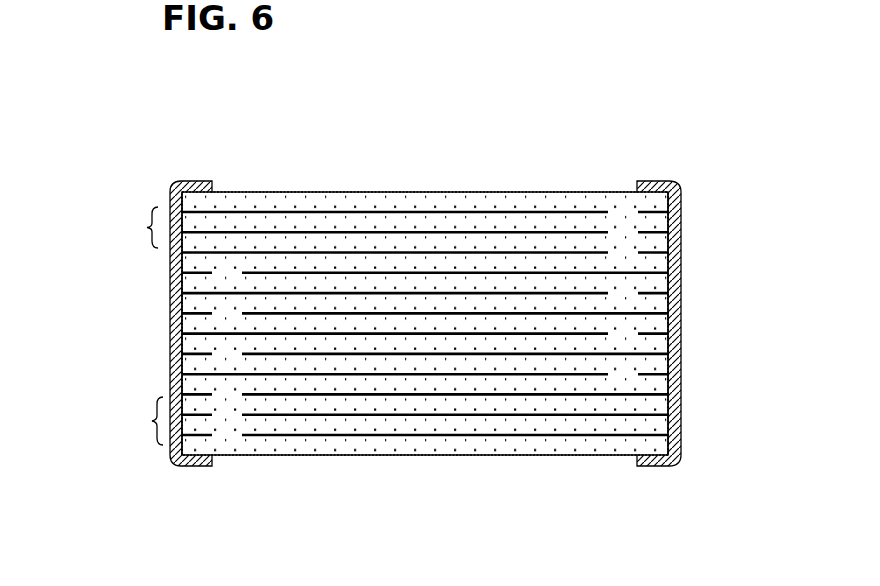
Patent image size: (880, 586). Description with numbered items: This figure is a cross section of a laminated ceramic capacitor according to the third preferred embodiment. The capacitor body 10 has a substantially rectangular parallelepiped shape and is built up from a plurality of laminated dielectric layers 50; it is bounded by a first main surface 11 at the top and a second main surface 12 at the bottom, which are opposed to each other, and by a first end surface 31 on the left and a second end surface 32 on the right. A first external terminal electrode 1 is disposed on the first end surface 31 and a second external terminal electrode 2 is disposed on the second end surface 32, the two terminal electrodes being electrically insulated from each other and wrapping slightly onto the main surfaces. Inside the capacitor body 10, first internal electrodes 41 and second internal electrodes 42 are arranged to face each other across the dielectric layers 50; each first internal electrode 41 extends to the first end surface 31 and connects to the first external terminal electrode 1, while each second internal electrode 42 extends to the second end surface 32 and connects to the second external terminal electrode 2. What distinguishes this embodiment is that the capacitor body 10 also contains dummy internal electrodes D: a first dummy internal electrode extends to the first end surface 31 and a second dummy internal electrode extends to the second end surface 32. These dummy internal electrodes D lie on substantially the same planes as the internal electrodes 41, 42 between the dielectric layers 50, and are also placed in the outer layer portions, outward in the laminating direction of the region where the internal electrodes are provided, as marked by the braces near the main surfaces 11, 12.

The first external terminal electrode 1 is at (168, 355).
The second external terminal electrode 2 is at (681, 370).
The capacitor body 10 is at (534, 187).
The first main surface 11 is at (415, 190).
The second main surface 12 is at (437, 457).
The first end surface 31 is at (168, 388).
The second end surface 32 is at (681, 405).
The first internal electrode 41 is at (333, 293).
The second internal electrode 42 is at (335, 355).
The dielectric layer 50 is at (506, 297).
The dummy internal electrode D is at (146, 326).